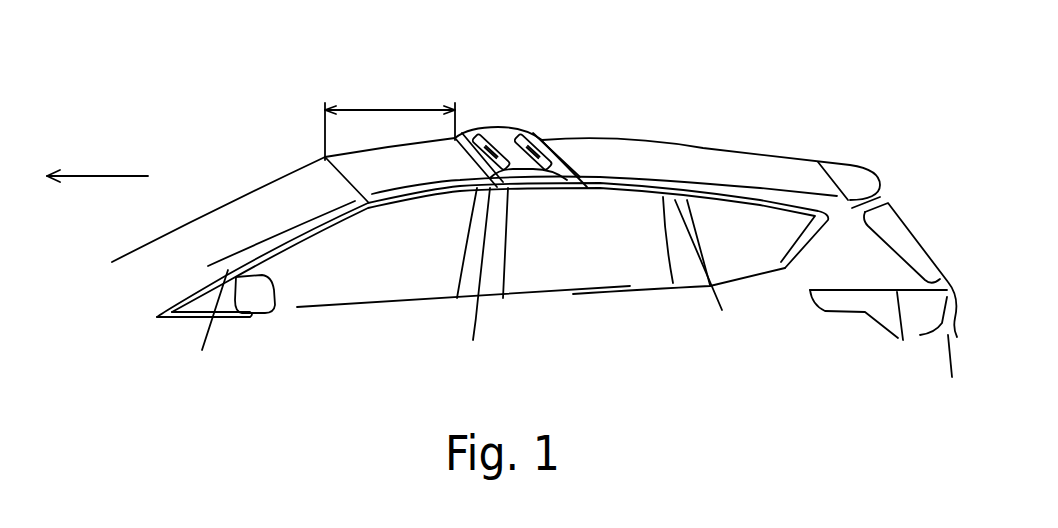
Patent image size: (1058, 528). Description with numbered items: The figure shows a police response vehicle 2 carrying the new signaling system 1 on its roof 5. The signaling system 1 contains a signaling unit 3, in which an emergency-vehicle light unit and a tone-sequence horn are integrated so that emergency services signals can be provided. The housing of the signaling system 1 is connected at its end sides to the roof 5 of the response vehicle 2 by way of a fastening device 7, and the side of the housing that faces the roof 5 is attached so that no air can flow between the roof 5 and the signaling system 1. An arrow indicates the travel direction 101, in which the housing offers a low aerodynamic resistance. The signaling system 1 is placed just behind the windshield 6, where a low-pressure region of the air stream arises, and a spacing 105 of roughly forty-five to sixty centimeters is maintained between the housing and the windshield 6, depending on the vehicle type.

The signaling system 1 is at (512, 140).
The response vehicle 2 is at (868, 250).
The signaling unit 3 is at (480, 140).
The roof 5 is at (713, 157).
The windshield 6 is at (262, 197).
The fastening device 7 is at (528, 187).
The travel direction 101 is at (100, 176).
The spacing 105 is at (388, 110).